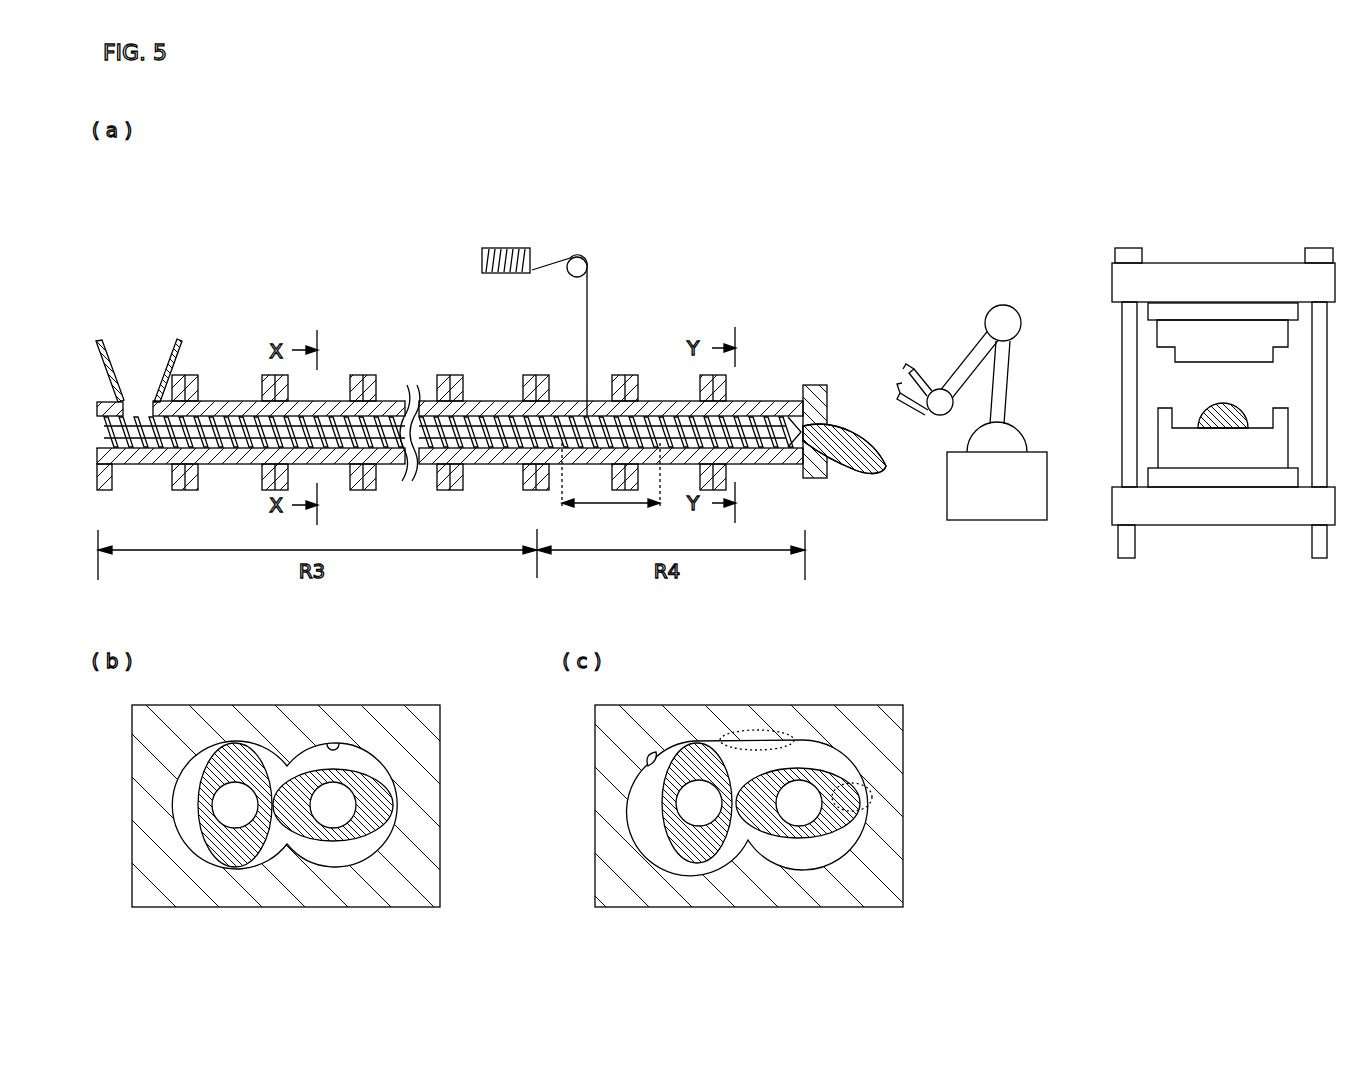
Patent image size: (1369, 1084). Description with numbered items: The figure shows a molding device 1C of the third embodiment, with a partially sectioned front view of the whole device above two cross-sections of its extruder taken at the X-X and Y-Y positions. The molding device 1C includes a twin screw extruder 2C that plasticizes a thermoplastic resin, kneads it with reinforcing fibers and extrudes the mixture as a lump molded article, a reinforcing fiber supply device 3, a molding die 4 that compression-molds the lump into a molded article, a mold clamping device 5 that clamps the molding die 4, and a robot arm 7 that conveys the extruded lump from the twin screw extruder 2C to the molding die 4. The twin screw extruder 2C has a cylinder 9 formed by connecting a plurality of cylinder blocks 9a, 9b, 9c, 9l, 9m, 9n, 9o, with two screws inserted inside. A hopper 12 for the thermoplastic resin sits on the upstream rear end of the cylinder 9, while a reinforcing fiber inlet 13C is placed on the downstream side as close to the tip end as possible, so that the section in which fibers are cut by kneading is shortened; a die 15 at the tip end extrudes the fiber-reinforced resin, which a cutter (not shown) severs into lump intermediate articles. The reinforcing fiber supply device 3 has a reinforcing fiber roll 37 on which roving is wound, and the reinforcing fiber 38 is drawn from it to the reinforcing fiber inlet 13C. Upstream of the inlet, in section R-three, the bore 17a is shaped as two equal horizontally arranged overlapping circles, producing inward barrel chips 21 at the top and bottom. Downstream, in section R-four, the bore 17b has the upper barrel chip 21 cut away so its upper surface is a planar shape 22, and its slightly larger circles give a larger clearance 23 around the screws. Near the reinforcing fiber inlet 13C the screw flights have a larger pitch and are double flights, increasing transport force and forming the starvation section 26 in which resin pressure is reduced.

The molding device 1C is at (1223, 366).
The reinforcing fiber supply device 3 is at (566, 298).
The molding die 4 is at (1243, 338).
The mold clamping device 5 is at (1240, 525).
The robot arm 7 is at (989, 306).
The cylinder 9 is at (435, 374).
The cylinder block 9a is at (100, 402).
The cylinder block 9b is at (225, 400).
The cylinder block 9c is at (328, 400).
The cylinder block 9l is at (470, 398).
The cylinder block 9m is at (554, 400).
The cylinder block 9n is at (650, 398).
The cylinder block 9o is at (785, 400).
The hopper 12 is at (180, 340).
The reinforcing fiber inlet 13C is at (597, 412).
The die 15 is at (826, 394).
The bore 17a is at (335, 745).
The bore 17b is at (660, 764).
The barrel chip 21 is at (284, 763).
The planar upper surface 22 is at (750, 740).
The clearance 23 is at (862, 783).
The starvation section 26 is at (611, 489).
The twin screw extruder 2C is at (392, 390).
The reinforcing fiber roll 37 is at (495, 248).
The reinforcing fiber 38 is at (590, 283).